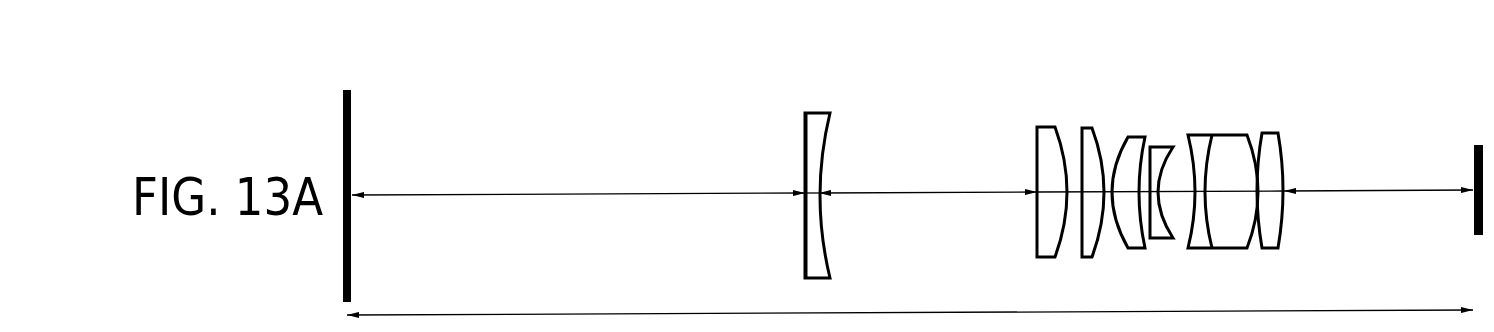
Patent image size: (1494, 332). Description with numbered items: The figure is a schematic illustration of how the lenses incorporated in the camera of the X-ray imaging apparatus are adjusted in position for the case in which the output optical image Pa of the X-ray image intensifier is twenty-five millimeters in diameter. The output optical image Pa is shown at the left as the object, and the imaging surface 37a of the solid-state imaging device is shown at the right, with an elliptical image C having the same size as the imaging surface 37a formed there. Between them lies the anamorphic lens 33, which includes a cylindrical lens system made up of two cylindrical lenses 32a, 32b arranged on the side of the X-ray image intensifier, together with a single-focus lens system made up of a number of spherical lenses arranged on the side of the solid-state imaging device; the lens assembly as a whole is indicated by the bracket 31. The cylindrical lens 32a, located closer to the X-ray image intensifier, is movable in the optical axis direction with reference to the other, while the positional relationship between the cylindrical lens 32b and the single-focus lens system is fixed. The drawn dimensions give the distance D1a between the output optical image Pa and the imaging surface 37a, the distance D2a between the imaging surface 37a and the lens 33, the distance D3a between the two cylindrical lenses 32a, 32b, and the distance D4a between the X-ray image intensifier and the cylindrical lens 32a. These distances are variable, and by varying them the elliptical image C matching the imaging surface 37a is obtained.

The output optical image Pa is at (351, 137).
The imaging lens system 31 is at (1167, 82).
The cylindrical lens 32a is at (812, 136).
The cylindrical lens 32b is at (1037, 144).
The anamorphic lens 33 is at (1263, 120).
The imaging surface 37a is at (1444, 193).
The elliptical image C is at (1478, 209).
The distance D1a is at (910, 297).
The distance D2a is at (1255, 175).
The distance D3a is at (921, 176).
The distance D4a is at (578, 177).